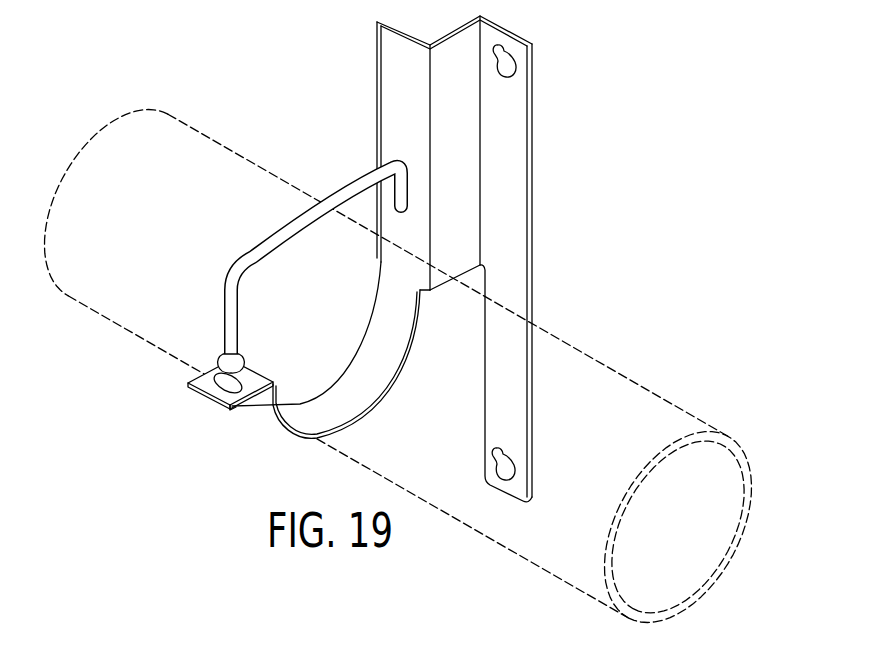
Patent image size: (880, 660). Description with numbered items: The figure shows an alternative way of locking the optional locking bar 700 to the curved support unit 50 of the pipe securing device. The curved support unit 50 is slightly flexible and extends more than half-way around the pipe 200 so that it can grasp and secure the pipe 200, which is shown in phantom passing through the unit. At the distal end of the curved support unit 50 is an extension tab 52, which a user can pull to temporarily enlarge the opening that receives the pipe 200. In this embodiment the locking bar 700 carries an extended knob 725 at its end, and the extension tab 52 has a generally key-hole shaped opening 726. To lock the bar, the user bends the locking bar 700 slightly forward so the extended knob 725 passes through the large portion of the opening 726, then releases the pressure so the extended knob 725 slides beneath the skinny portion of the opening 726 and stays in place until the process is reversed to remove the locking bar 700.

The pipe 200 is at (130, 121).
The locking bar 700 is at (290, 232).
The extended knob 725 is at (219, 363).
The extension tab 52 is at (202, 385).
The opening 726 is at (230, 410).
The curved support unit 50 is at (368, 395).